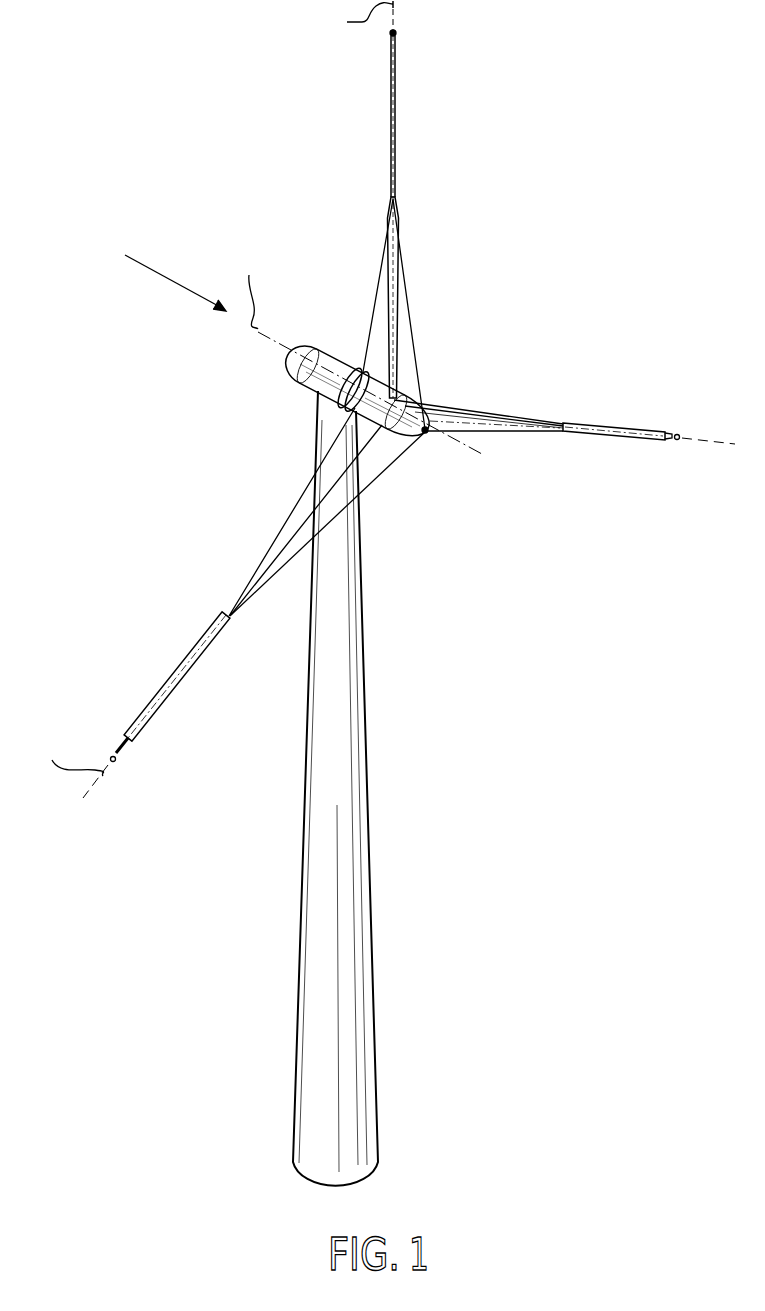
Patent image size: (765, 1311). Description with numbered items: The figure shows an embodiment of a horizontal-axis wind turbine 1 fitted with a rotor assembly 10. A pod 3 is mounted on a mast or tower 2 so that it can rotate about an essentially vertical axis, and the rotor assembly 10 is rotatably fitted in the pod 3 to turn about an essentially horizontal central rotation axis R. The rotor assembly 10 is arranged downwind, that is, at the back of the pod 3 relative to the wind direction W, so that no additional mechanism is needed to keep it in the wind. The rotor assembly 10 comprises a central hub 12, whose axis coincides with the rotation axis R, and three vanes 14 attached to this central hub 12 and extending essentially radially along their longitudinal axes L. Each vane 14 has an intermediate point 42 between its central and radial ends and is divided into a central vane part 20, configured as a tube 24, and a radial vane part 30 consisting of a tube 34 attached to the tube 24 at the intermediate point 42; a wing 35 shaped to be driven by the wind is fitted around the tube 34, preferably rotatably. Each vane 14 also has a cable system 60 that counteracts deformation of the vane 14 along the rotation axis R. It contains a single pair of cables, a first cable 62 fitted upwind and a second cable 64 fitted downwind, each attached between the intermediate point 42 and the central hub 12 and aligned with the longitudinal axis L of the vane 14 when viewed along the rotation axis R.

The wind turbine 1 is at (392, 864).
The tower 2 is at (318, 790).
The pod 3 is at (331, 361).
The rotor assembly 10 is at (570, 266).
The central hub 12 is at (407, 432).
The vane 14 is at (448, 235).
The central vane part 20 is at (400, 312).
The tube 24 is at (508, 416).
The radial vane part 30 is at (399, 151).
The tube 34 is at (668, 430).
The wing 35 is at (585, 423).
The intermediate point 42 is at (384, 193).
The cable system 60 is at (254, 475).
The first cable 62 is at (272, 538).
The second cable 64 is at (380, 452).